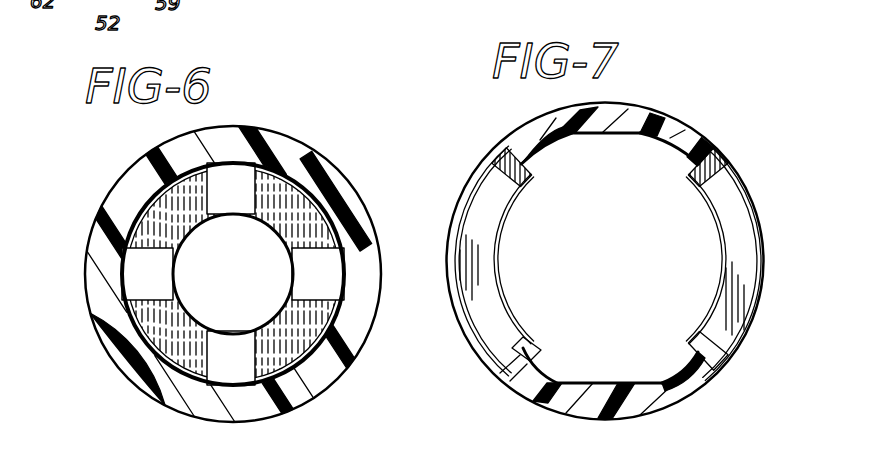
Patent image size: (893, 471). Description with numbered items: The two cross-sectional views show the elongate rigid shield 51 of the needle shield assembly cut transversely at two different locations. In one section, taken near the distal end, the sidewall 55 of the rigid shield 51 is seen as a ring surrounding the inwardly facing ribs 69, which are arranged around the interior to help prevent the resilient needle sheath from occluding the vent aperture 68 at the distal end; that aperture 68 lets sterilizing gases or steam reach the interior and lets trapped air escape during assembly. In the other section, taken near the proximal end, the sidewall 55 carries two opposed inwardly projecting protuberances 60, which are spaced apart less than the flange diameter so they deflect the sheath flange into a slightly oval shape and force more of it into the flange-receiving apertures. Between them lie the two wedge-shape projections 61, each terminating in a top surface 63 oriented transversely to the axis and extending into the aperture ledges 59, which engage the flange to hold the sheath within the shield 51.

In FIG. 6, the rigid shield 51 is at (210, 250).
In FIG. 7, the rigid shield 51 is at (593, 239).
In FIG. 6, the sidewall 55 is at (84, 267).
In FIG. 7, the ledge 59 is at (468, 225).
In FIG. 7, the inwardly projecting protuberances 60 is at (627, 135).
In FIG. 7, the wedge-shape projections 61 is at (492, 157).
In FIG. 7, the top surface 63 is at (718, 198).
In FIG. 6, the aperture 68 is at (203, 308).
In FIG. 6, the inwardly facing ribs 69 is at (215, 187).